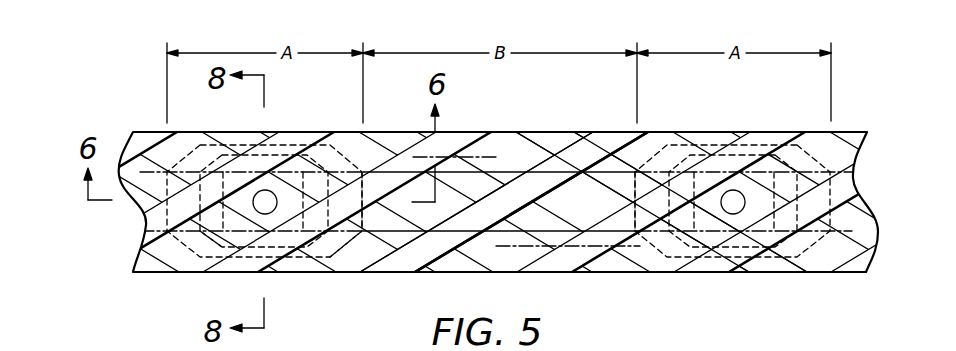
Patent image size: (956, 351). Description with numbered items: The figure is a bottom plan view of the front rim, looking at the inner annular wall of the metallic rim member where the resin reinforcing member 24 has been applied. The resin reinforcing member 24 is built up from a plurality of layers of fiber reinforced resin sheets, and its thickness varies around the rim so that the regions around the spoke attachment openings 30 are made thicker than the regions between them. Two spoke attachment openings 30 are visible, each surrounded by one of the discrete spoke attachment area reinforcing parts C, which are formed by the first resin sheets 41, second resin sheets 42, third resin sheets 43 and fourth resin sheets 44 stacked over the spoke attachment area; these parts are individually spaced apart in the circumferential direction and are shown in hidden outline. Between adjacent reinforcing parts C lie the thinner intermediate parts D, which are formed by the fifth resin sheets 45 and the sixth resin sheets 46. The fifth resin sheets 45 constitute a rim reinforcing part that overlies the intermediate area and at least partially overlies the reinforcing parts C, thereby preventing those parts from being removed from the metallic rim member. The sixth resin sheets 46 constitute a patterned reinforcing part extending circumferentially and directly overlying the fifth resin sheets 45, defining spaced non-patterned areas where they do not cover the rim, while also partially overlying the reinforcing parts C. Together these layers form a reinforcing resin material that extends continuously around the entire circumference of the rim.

The resin reinforcing member 24 is at (141, 127).
The spoke attachment openings 30 is at (270, 213).
The first resin sheets 41 is at (243, 233).
The second resin sheets 42 is at (345, 233).
The third resin sheets 43 is at (247, 153).
The fourth resin sheets 44 is at (287, 146).
The fifth resin sheets 45 is at (506, 158).
The sixth resin sheets 46 is at (592, 148).
The discrete spoke attachment area reinforcing parts C is at (177, 253).
The intermediate parts D is at (410, 257).